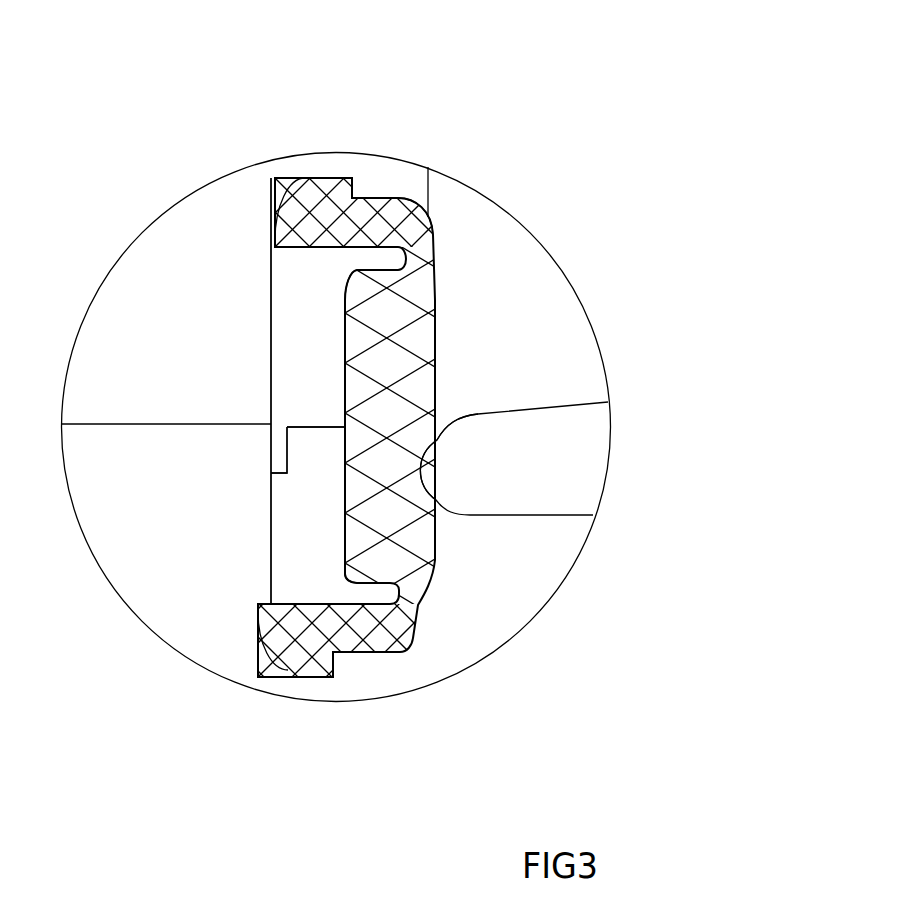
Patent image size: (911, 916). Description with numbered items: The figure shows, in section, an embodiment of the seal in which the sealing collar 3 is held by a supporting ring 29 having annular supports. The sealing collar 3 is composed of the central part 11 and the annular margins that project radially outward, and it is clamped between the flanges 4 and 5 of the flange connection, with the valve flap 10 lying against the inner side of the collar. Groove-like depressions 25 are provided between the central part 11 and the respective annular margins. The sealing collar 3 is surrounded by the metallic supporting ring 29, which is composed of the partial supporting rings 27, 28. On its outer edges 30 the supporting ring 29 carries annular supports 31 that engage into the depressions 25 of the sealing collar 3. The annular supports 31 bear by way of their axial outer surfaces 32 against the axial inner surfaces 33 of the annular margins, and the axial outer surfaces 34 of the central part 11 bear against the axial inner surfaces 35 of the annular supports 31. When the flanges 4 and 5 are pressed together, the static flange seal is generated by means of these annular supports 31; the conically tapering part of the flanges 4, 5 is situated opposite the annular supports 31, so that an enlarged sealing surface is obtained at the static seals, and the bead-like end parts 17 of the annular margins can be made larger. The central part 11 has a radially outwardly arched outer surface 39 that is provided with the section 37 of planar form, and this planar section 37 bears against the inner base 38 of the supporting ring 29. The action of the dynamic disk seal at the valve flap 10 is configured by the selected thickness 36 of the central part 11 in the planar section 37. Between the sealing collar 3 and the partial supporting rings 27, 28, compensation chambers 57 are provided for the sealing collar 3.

The sealing collar 3 is at (443, 300).
The flange 4 is at (210, 220).
The flange 5 is at (147, 590).
The valve flap 10 is at (535, 432).
The central part 11 is at (407, 368).
The end part 17 is at (285, 624).
The groove-like depression 25 is at (397, 262).
The partial supporting ring 27 is at (293, 315).
The partial supporting ring 28 is at (297, 515).
The supporting ring 29 is at (270, 444).
The outer edge 30 is at (327, 247).
The annular support 31 is at (425, 215).
The axial outer surface 32 is at (395, 225).
The axial inner surface 33 is at (395, 225).
The axial outer surface 34 is at (408, 323).
The axial inner surface 35 is at (357, 272).
The thickness 36 is at (393, 440).
The section of planar form 37 is at (350, 397).
The inner base 38 is at (345, 477).
The outer surface 39 is at (437, 333).
The compensation chamber 57 is at (360, 303).